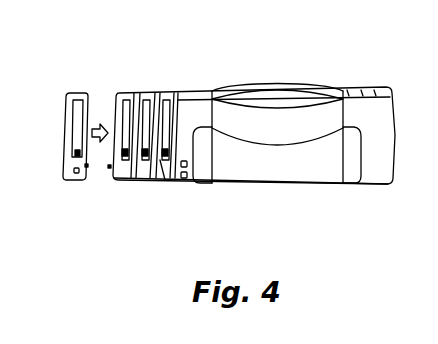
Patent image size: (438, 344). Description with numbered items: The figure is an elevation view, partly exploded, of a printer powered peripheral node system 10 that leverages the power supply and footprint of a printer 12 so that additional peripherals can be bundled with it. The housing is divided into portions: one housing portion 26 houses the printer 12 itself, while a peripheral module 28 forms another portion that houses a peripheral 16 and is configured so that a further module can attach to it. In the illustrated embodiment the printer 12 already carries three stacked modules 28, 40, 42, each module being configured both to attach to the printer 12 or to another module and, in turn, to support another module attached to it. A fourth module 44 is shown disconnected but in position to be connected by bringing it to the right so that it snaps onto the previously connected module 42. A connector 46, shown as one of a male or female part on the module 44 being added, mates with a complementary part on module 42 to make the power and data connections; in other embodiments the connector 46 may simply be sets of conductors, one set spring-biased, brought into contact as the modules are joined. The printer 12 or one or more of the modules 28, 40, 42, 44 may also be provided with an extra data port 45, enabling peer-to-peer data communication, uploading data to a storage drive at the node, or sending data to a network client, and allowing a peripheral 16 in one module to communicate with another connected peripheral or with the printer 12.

The printer powered peripheral node system 10 is at (340, 69).
The printer 12 is at (318, 186).
The peripheral 16 is at (165, 181).
The housing portion 26 is at (202, 89).
The peripheral module 28 is at (172, 91).
The module 40 is at (147, 90).
The module 42 is at (134, 91).
The module 44 is at (83, 93).
The data port 45 is at (77, 181).
The connector 46 is at (108, 167).